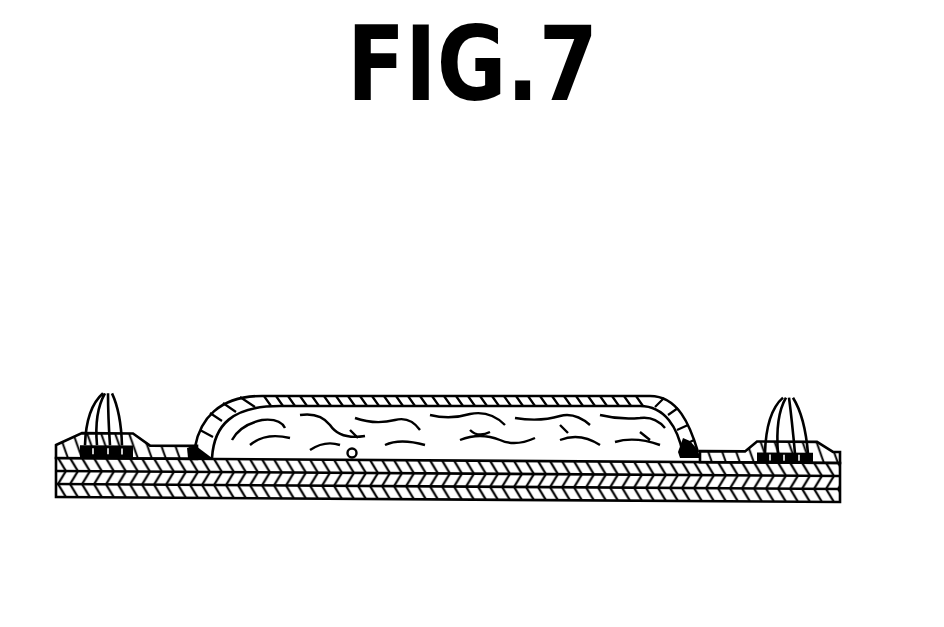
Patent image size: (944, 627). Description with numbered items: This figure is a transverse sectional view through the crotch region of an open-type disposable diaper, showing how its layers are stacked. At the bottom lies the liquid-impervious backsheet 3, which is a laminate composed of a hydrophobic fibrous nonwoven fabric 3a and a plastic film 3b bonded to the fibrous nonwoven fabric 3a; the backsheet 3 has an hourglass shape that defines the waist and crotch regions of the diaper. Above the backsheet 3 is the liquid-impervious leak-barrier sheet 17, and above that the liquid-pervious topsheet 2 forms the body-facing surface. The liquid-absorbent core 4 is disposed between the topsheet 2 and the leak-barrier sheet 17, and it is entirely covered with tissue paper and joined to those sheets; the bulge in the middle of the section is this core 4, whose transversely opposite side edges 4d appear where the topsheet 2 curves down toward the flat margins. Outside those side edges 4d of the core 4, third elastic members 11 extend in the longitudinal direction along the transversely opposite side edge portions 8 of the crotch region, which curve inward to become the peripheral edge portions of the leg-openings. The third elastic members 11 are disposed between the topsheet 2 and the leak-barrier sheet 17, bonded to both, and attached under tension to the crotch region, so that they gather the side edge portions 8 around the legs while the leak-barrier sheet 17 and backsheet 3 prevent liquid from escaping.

The liquid-pervious topsheet 2 is at (451, 374).
The liquid-impervious backsheet 3 is at (448, 535).
The hydrophobic fibrous nonwoven fabric 3a is at (522, 483).
The plastic film 3b is at (700, 495).
The liquid-absorbent core 4 is at (548, 430).
The transversely opposite side edges of the core 4d is at (223, 412).
The transversely opposite side edge portions 8 is at (105, 475).
The third elastic members 11 is at (449, 399).
The liquid-impervious leak-barrier sheet 17 is at (350, 462).